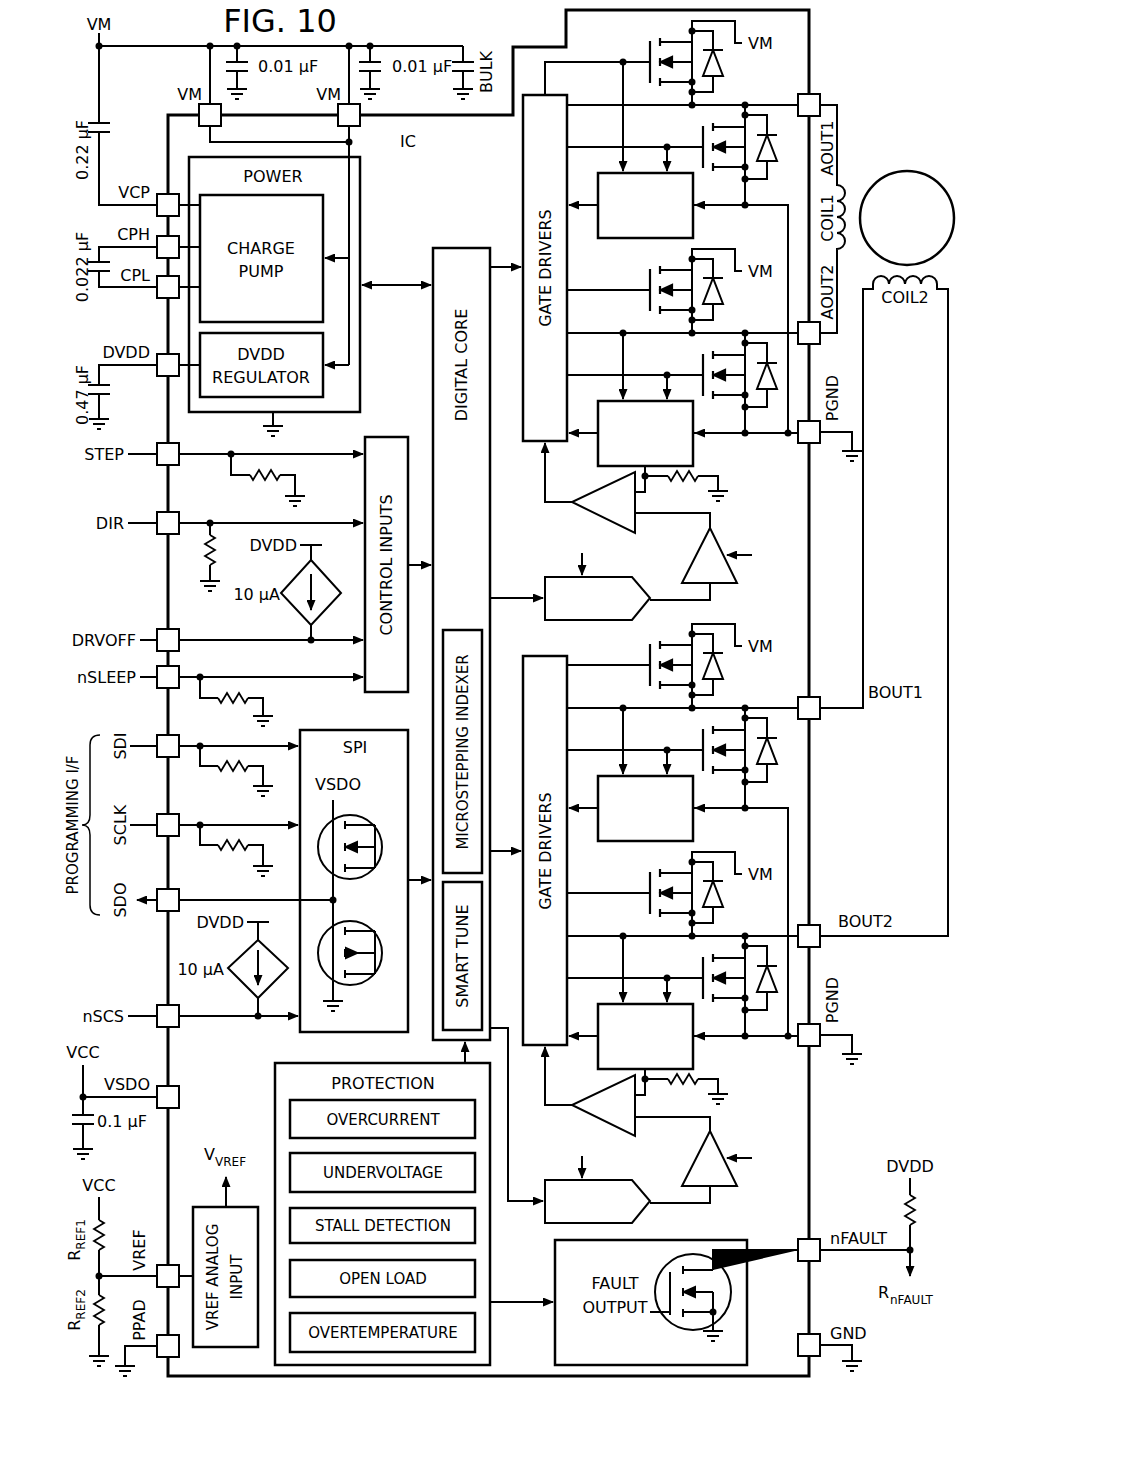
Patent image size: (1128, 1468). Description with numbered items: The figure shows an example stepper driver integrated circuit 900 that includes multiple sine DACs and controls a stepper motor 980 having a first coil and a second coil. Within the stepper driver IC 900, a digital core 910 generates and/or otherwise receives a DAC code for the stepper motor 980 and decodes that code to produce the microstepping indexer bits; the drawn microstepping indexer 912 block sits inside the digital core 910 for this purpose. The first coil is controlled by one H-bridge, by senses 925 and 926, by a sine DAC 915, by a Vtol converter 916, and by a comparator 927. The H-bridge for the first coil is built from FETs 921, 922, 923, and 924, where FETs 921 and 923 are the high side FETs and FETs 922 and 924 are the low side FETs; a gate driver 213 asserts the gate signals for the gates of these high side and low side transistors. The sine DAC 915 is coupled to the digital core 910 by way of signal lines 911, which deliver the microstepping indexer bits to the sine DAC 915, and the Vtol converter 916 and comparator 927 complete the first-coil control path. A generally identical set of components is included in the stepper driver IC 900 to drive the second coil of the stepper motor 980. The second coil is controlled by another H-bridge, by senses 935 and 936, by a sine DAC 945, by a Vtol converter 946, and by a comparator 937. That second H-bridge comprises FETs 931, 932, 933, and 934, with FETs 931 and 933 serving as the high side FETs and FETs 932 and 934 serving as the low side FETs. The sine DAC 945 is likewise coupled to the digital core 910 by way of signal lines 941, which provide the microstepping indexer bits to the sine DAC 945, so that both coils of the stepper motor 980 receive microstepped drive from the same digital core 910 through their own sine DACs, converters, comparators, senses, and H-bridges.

The stepper driver integrated circuit 900 is at (815, 50).
The stepper motor 980 is at (913, 156).
The digital core 910 is at (458, 247).
The gate driver 213 is at (521, 180).
The microstepping indexer 912 is at (458, 630).
The signal line 911 is at (512, 597).
The sine DAC 915 is at (637, 583).
The Vtol converter 916 is at (720, 540).
The FET 921 is at (648, 50).
The FET 922 is at (700, 133).
The FET 923 is at (648, 272).
The FET 924 is at (700, 361).
The sense 925 is at (693, 215).
The sense 926 is at (693, 443).
The comparator 927 is at (592, 487).
The FET 931 is at (648, 653).
The FET 932 is at (700, 736).
The FET 933 is at (648, 875).
The FET 934 is at (700, 964).
The sense 935 is at (693, 818).
The sense 936 is at (693, 1046).
The comparator 937 is at (592, 1090).
The signal line 941 is at (515, 1205).
The sine DAC 945 is at (637, 1187).
The Vtol converter 946 is at (720, 1147).